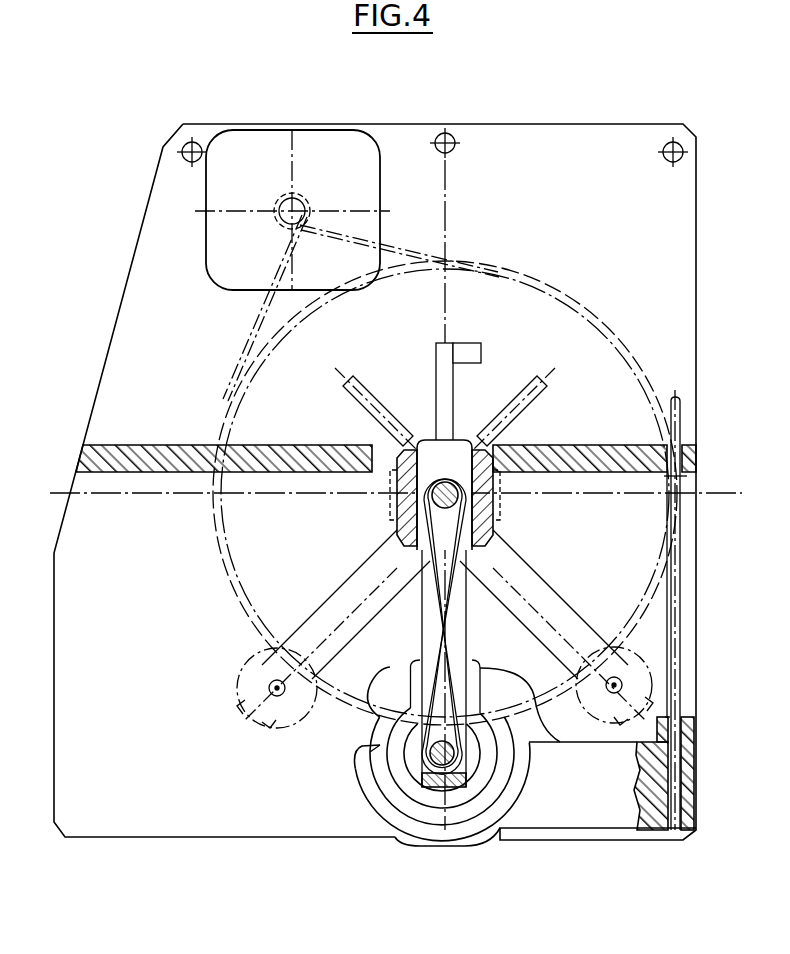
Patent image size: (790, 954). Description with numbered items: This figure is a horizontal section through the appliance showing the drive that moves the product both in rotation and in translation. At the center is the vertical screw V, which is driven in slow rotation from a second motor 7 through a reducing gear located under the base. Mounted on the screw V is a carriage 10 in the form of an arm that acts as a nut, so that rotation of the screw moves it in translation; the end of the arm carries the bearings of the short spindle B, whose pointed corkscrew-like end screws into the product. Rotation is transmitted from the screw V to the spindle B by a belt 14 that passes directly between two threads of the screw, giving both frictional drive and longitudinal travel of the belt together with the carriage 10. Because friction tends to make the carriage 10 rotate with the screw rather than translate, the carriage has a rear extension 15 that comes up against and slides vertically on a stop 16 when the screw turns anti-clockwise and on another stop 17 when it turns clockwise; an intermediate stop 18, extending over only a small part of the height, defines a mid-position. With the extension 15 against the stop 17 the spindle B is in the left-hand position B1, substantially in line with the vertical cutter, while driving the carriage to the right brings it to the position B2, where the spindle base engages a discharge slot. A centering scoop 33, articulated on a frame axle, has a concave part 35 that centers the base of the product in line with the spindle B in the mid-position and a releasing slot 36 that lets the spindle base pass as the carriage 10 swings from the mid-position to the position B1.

The second motor 7 is at (315, 165).
The intermediate stop 18 is at (465, 355).
The rear extension 15 is at (436, 389).
The stop 16 is at (370, 438).
The stop 17 is at (507, 441).
The carriage 10 is at (406, 510).
The vertical screw V is at (460, 505).
The belt 14 is at (448, 600).
The spindle position B1 is at (333, 728).
The spindle position B2 is at (560, 730).
The releasing slot 36 is at (362, 746).
The spindle B is at (420, 770).
The concave part 35 is at (490, 775).
The centering scoop 33 is at (577, 795).